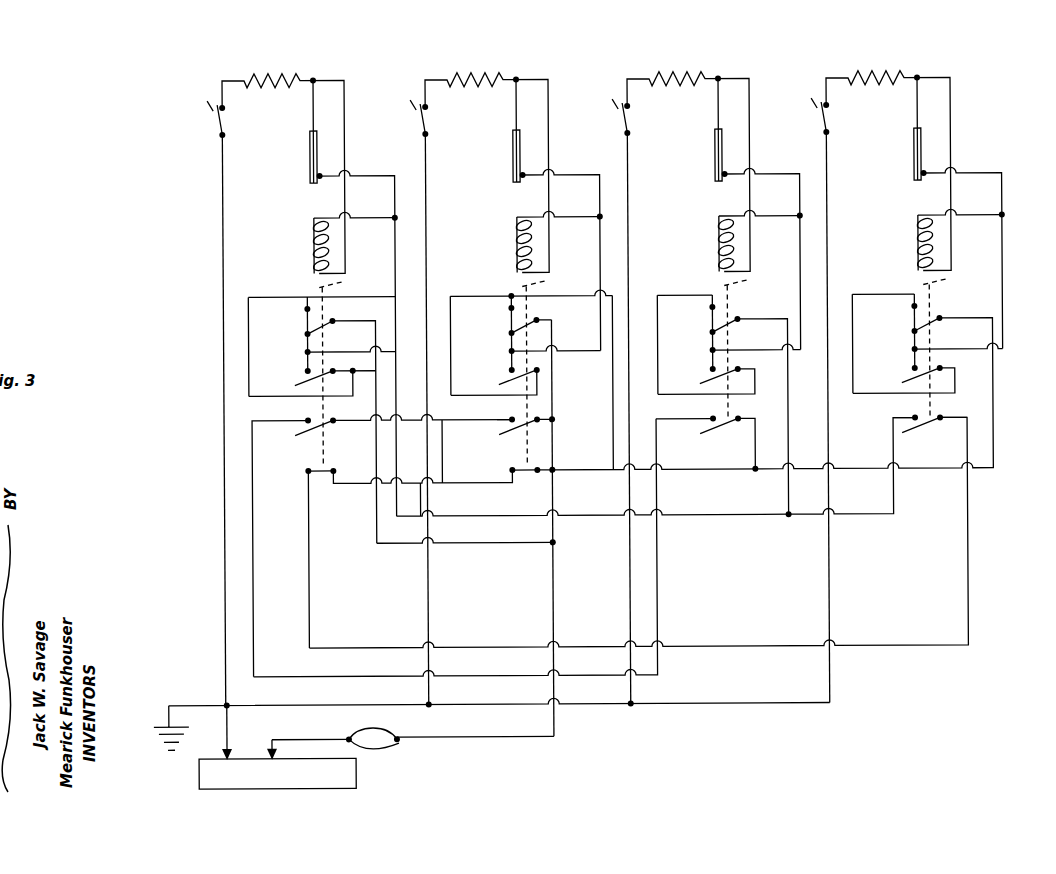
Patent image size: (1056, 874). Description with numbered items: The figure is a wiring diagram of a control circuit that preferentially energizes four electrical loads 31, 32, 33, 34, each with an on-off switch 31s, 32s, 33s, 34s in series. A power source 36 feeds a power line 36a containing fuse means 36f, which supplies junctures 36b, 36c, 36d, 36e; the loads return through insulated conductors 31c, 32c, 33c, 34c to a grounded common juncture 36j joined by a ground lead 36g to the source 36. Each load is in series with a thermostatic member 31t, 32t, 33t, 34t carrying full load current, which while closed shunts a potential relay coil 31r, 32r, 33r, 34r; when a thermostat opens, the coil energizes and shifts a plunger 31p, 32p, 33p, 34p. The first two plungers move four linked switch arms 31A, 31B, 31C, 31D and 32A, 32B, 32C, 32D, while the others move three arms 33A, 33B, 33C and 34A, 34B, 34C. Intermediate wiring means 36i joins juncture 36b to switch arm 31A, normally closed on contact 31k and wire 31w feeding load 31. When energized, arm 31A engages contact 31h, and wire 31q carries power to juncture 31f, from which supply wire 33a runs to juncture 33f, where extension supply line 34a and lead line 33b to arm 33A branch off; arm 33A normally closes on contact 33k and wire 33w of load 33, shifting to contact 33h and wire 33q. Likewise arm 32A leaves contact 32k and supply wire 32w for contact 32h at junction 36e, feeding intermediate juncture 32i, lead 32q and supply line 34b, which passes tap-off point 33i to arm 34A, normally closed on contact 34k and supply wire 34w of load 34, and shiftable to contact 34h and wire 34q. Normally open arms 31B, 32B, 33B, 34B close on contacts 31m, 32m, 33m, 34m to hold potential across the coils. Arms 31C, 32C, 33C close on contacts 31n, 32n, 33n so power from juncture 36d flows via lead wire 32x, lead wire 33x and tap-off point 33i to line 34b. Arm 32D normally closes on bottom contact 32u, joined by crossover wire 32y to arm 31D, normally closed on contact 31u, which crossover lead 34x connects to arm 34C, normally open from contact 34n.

The electrical load 31 is at (275, 76).
The on-off switch 31s is at (214, 118).
The thermostatic member 31t is at (308, 157).
The potential relay coil 31r is at (312, 230).
The wire 31w is at (393, 256).
The wire 31q is at (247, 325).
The plunger 31p is at (354, 367).
The contact 31h is at (305, 310).
The contact 31k is at (305, 353).
The contact 31m is at (305, 372).
The contact 31n is at (305, 422).
The contact 31u is at (304, 473).
The switch arm 31A is at (333, 323).
The switch arm 31B is at (330, 380).
The switch arm 31C is at (332, 424).
The switch arm 31D is at (334, 476).
The juncture 31f is at (378, 366).
The insulated conductor 31c is at (222, 575).
The electrical load 32 is at (478, 76).
The on-off switch 32s is at (417, 118).
The thermostatic member 32t is at (511, 158).
The potential relay coil 32r is at (515, 230).
The supply wire 32w is at (598, 256).
The lead 32q is at (449, 325).
The plunger 32p is at (558, 366).
The intermediate juncture 32i is at (508, 296).
The contact 32h is at (509, 310).
The contact 32k is at (509, 353).
The contact 32m is at (509, 372).
The contact 32n is at (509, 419).
The bottom contact 32u is at (508, 470).
The switch arm 32A is at (516, 328).
The switch arm 32B is at (518, 385).
The switch arm 32C is at (518, 428).
The switch arm 32D is at (520, 477).
The lead wire 32x is at (440, 424).
The crossover wire 32y is at (440, 485).
The insulated conductor 32c is at (432, 598).
The electrical load 33 is at (678, 76).
The on-off switch 33s is at (619, 118).
The thermostatic member 33t is at (713, 158).
The potential relay coil 33r is at (717, 230).
The wire 33w is at (798, 256).
The wire 33q is at (656, 325).
The plunger 33p is at (759, 343).
The contact 33h is at (710, 310).
The contact 33k is at (710, 353).
The contact 33m is at (710, 372).
The contact 33n is at (710, 419).
The switch arm 33A is at (738, 323).
The switch arm 33B is at (735, 380).
The switch arm 33C is at (737, 424).
The supply wire 33a is at (452, 519).
The lead line 33b is at (788, 380).
The intermediate juncture 33i is at (755, 468).
The juncture 33f is at (785, 518).
The lead wire 33x is at (470, 676).
The insulated conductor 33c is at (627, 607).
The electrical load 34 is at (882, 75).
The on-off switch 34s is at (818, 118).
The thermostatic member 34t is at (912, 168).
The potential relay coil 34r is at (916, 230).
The supply wire 34w is at (1000, 258).
The wire 34q is at (851, 325).
The plunger 34p is at (958, 343).
The contact 34h is at (912, 310).
The contact 34k is at (912, 353).
The contact 34m is at (912, 372).
The contact 34n is at (912, 419).
The switch arm 34A is at (940, 323).
The switch arm 34B is at (938, 380).
The switch arm 34C is at (939, 424).
The extension supply line 34a is at (870, 519).
The supply line 34b is at (993, 437).
The crossover lead 34x is at (795, 647).
The insulated conductor 34c is at (828, 572).
The power source 36 is at (352, 771).
The power line 36a is at (420, 747).
The junction 36b is at (552, 546).
The juncture 36c is at (552, 472).
The juncture 36d is at (552, 421).
The junction 36e is at (537, 320).
The fuse means 36f is at (375, 738).
The ground lead 36g is at (230, 737).
The intermediate wiring means 36i is at (392, 548).
The common juncture 36j is at (223, 700).